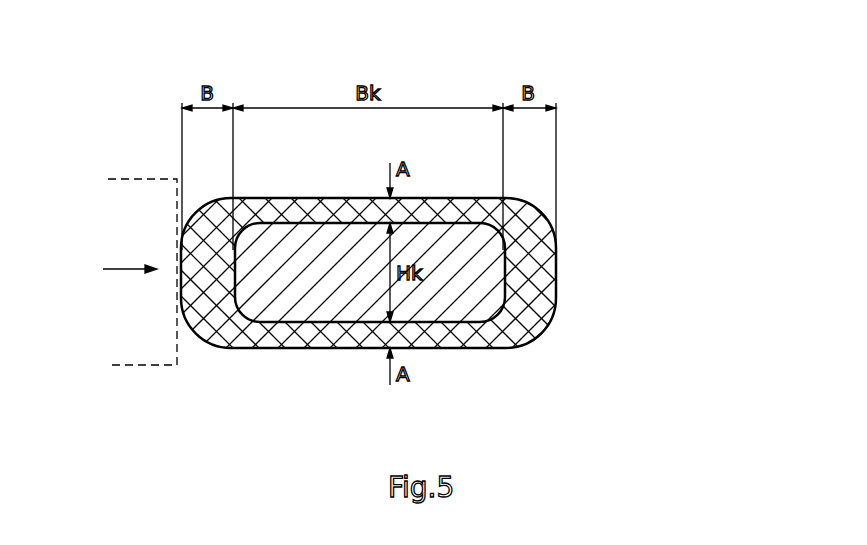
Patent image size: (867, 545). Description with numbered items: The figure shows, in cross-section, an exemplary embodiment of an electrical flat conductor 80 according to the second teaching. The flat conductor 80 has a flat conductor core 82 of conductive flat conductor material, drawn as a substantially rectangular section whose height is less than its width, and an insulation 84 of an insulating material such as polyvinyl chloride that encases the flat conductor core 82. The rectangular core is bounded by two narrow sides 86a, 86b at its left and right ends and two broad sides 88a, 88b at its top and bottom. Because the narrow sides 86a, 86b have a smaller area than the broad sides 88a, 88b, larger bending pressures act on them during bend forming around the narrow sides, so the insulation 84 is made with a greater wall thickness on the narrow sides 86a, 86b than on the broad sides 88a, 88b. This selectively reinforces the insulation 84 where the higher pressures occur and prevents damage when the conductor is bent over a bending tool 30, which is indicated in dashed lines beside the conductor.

The flat conductor 80 is at (366, 243).
The flat conductor core 82 is at (460, 247).
The insulation 84 is at (366, 275).
The narrow side 86a is at (508, 288).
The narrow side 86b is at (230, 278).
The broad side 88a is at (280, 218).
The broad side 88b is at (303, 325).
The bending tool 30 is at (137, 368).